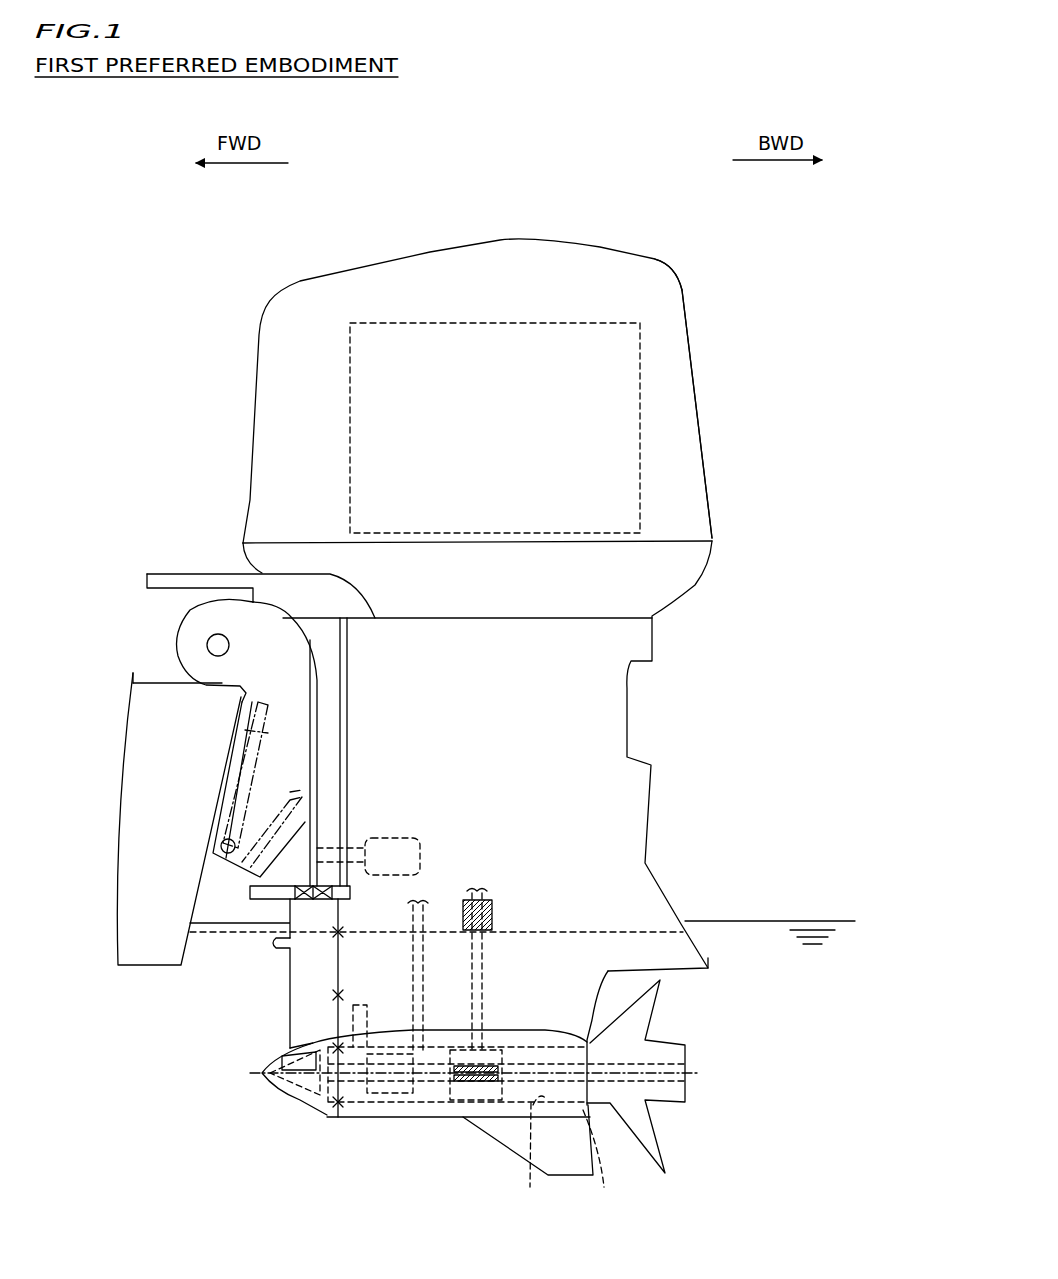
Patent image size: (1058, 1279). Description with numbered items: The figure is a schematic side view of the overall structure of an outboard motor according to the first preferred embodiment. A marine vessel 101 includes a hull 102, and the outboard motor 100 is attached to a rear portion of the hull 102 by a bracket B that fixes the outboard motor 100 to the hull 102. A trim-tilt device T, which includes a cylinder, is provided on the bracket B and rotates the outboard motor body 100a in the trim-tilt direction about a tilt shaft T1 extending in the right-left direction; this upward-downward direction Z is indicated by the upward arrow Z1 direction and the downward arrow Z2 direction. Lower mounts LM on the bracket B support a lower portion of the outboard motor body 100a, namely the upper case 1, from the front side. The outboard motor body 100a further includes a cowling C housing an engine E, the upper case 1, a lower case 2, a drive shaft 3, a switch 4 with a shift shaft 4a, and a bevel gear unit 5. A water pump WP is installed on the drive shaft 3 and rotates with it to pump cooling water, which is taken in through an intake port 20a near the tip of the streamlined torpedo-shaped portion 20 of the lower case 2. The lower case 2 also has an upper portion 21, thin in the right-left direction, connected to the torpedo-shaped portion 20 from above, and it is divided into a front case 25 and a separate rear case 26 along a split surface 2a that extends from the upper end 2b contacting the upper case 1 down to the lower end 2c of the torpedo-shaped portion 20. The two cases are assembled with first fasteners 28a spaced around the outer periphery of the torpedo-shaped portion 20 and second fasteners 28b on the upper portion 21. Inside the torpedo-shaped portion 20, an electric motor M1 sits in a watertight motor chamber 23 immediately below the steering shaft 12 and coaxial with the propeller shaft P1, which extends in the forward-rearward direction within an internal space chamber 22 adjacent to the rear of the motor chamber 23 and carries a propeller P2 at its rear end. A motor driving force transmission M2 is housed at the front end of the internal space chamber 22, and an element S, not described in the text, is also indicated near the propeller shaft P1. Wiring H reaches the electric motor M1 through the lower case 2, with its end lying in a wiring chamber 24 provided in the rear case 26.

The marine vessel 101 is at (110, 178).
The outboard motor 100 is at (713, 246).
The outboard motor body 100a is at (692, 340).
The cowling C is at (655, 268).
The engine E is at (600, 322).
The upper case 1 is at (641, 722).
The lower case 2 is at (702, 945).
The split surface 2a is at (336, 946).
The upper end of the lower case 2b is at (380, 946).
The lower end of the torpedo-shaped portion 2c is at (369, 1118).
The drive shaft 3 is at (483, 1010).
The switch 4 is at (427, 986).
The shift shaft 4a is at (422, 1012).
The bevel gear unit 5 is at (470, 1103).
The steering shaft 12 is at (348, 670).
The torpedo-shaped portion 20 is at (262, 1068).
The intake port 20a is at (284, 1062).
The upper portion 21 is at (298, 1003).
The internal space chamber 22 is at (540, 1112).
The motor chamber 23 is at (459, 1079).
The wiring chamber 24 is at (362, 1012).
The front case 25 is at (316, 920).
The rear case 26 is at (562, 924).
The first fasteners 28a is at (330, 1045).
The second fasteners 28b is at (274, 941).
The bracket B is at (180, 616).
The trim-tilt device T is at (212, 792).
The tilt shaft T1 is at (207, 645).
The wiring H is at (291, 888).
The lower mounts LM is at (420, 842).
The water pump WP is at (493, 912).
The electric motor M1 is at (305, 1100).
The motor driving force transmission M2 is at (397, 1090).
The sensor S is at (436, 1082).
The propeller shaft P1 is at (575, 1155).
The propeller P2 is at (680, 1100).
The vertical direction Z is at (887, 266).
The arrow Z1 direction Z1 is at (867, 266).
The arrow Z2 direction Z2 is at (867, 312).
The hull 102 is at (133, 712).